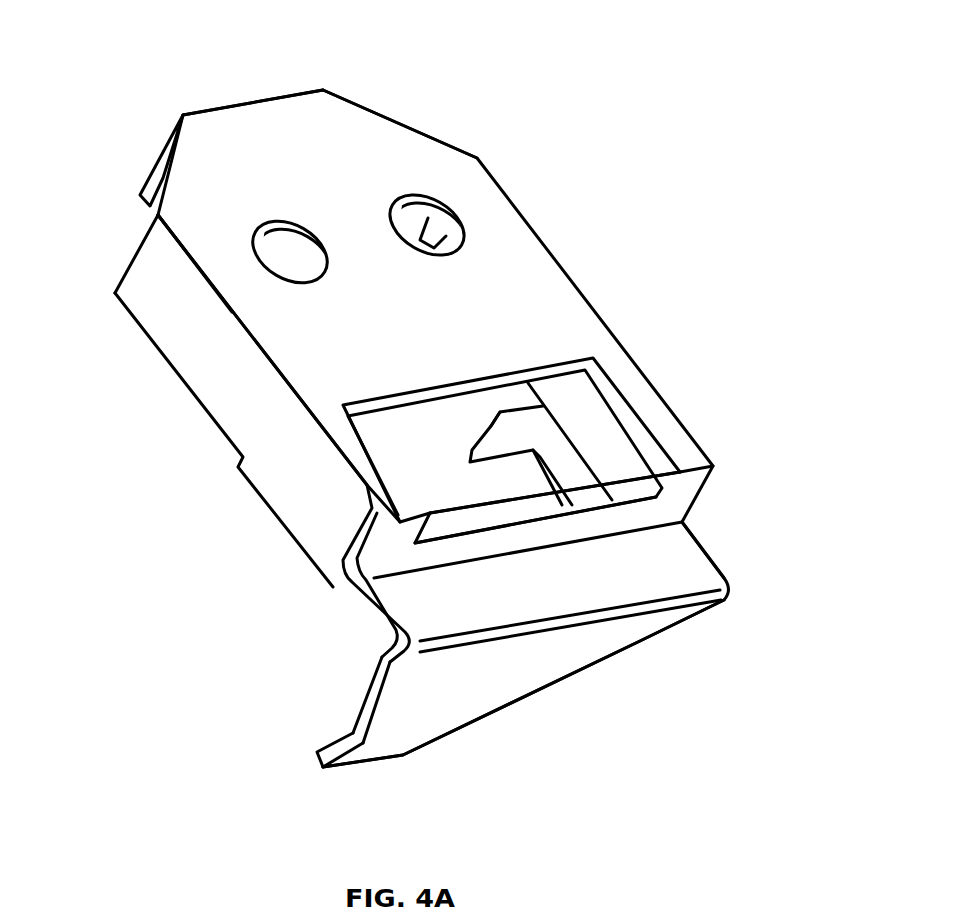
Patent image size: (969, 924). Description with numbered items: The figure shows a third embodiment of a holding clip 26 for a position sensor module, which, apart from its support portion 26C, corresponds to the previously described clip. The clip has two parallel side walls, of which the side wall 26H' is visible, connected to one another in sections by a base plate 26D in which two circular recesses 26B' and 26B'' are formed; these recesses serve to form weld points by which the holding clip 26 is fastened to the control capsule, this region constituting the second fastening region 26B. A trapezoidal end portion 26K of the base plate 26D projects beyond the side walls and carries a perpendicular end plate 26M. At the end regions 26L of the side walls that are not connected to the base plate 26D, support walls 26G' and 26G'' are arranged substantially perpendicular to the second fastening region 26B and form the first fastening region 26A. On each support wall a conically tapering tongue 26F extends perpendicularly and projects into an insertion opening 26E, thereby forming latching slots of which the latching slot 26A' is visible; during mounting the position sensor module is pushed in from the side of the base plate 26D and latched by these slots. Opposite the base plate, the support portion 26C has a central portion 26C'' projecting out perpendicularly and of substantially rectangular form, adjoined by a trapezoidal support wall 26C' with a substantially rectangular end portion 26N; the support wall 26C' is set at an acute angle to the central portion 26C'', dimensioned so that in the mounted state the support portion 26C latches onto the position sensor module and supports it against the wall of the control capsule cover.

The holding clip 26 is at (540, 200).
The trapezoidal end portion 26K is at (218, 137).
The base plate 26D is at (300, 137).
The circular recess 26B' is at (315, 155).
The circular recess 26B'' is at (455, 157).
The second fastening region 26B is at (127, 261).
The end plate 26M is at (150, 182).
The side wall 26H' is at (184, 440).
The support wall 26G'' is at (556, 429).
The insertion opening 26E is at (476, 455).
The conically tapering tongue 26F is at (502, 440).
The first fastening region 26A is at (405, 507).
The latching slot 26A' is at (528, 616).
The end region 26L is at (272, 522).
The support wall 26G' is at (323, 573).
The end portion 26N is at (332, 748).
The support portion 26C is at (523, 704).
The support wall 26C' is at (579, 644).
The central portion 26C'' is at (741, 524).